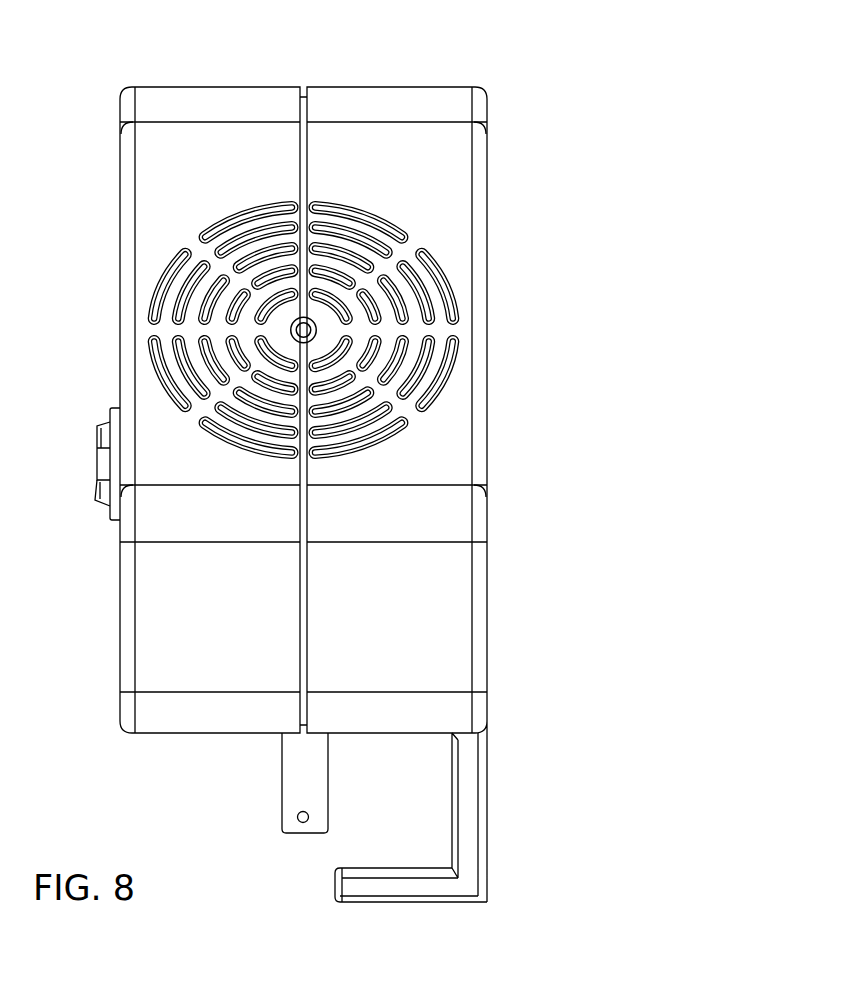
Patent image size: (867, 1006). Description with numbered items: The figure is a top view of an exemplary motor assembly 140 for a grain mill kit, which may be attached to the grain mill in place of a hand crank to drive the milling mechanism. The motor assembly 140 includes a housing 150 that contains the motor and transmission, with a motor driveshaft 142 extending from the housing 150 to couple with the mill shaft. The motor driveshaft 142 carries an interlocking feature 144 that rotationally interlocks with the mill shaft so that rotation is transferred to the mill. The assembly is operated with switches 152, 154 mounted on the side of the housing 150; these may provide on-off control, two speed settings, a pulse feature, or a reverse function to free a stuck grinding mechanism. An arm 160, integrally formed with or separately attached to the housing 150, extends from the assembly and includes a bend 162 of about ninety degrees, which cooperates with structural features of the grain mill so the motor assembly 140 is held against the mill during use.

The motor assembly 140 is at (532, 154).
The motor driveshaft 142 is at (293, 790).
The interlocking feature 144 is at (303, 828).
The housing 150 is at (127, 230).
The switch 152 is at (100, 462).
The switch 154 is at (100, 505).
The arm 160 is at (476, 832).
The bend 162 is at (399, 890).